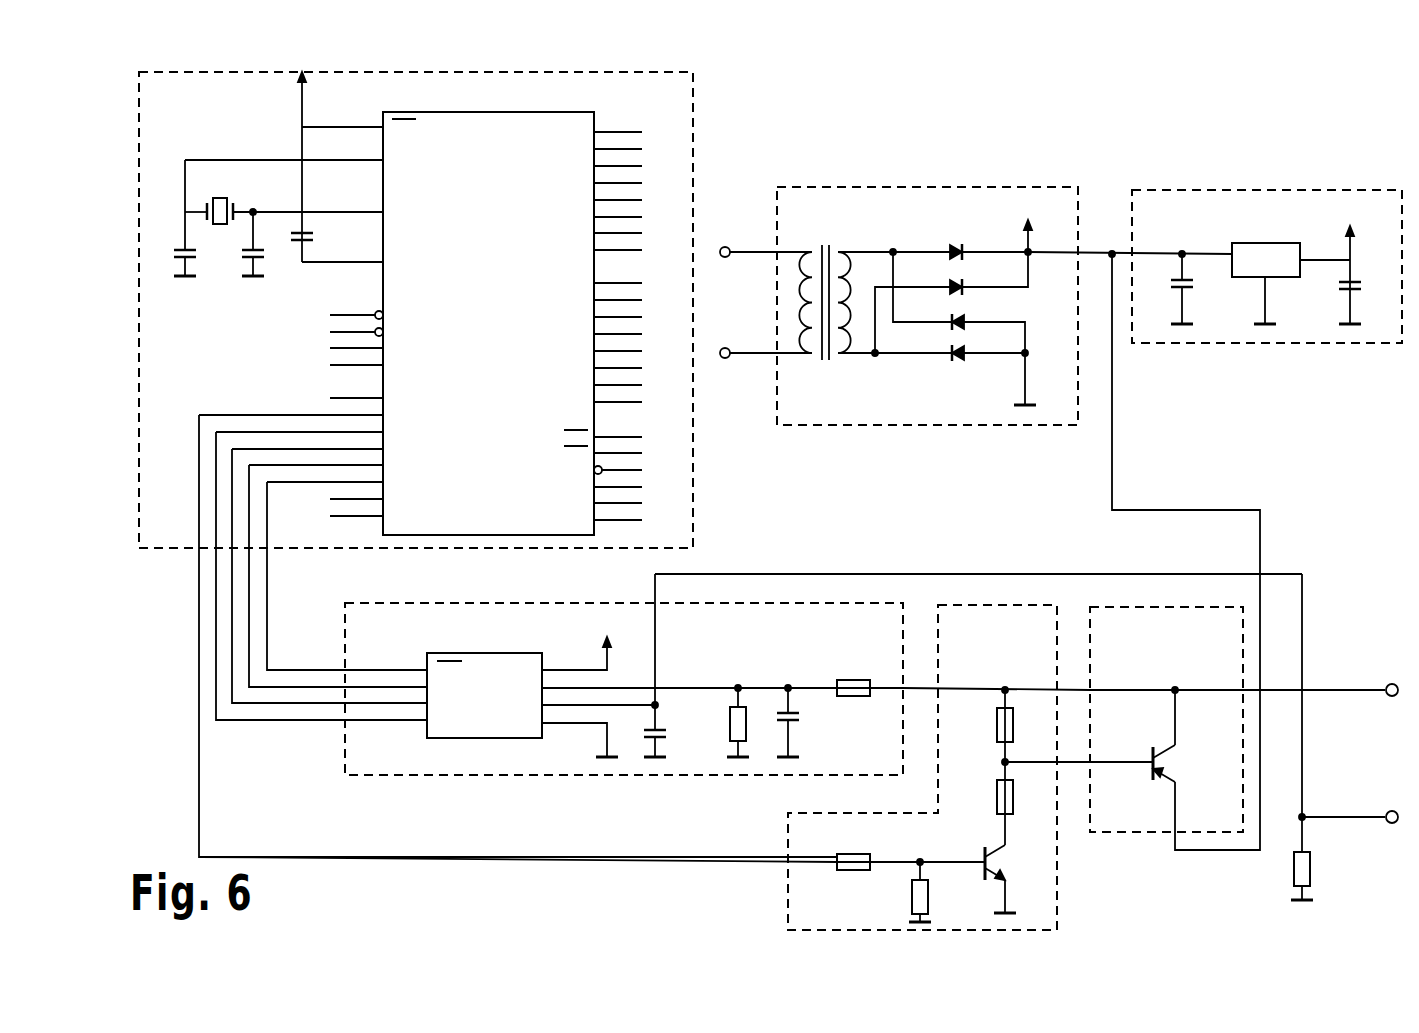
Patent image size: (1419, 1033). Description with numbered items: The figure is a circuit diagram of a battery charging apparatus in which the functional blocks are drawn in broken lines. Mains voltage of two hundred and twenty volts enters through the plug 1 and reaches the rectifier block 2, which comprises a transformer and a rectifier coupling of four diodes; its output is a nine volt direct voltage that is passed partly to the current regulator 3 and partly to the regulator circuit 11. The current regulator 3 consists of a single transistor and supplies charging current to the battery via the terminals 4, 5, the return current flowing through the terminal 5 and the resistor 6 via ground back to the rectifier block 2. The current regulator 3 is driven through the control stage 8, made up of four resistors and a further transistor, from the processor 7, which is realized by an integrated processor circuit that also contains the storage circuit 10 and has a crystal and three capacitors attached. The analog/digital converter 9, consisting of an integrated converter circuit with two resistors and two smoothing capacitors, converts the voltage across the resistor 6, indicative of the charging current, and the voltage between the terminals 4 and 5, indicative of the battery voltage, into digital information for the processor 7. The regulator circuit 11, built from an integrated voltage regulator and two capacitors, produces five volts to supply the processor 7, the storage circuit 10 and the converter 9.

The plug 1 is at (762, 311).
The rectifier block 2 is at (1004, 306).
The current regulator 3 is at (1153, 552).
The terminal 4 is at (1350, 702).
The terminal 5 is at (1348, 824).
The resistor 6 is at (1316, 737).
The processor 7 is at (416, 311).
The control stage 8 is at (628, 767).
The analog/digital converter 9 is at (624, 674).
The storage circuit 10 is at (412, 311).
The regulator circuit 11 is at (1267, 266).